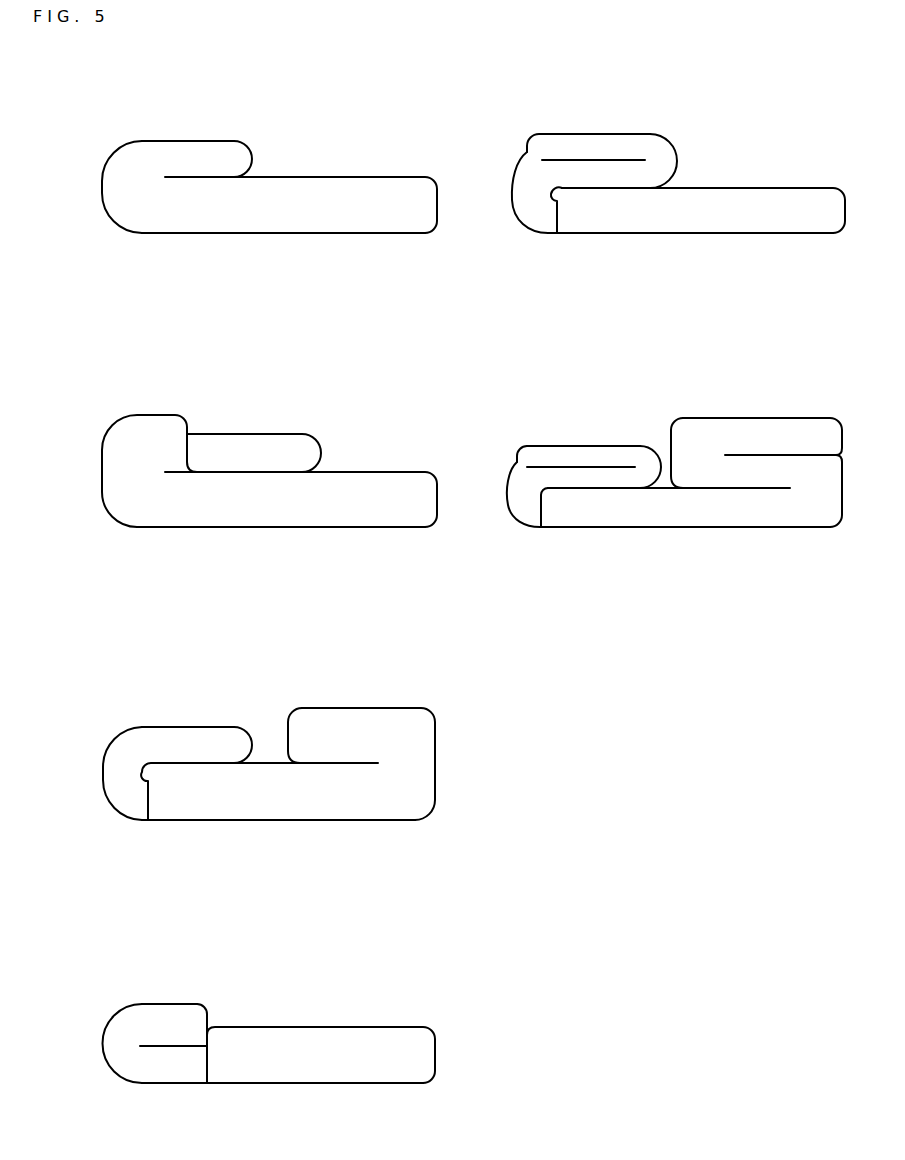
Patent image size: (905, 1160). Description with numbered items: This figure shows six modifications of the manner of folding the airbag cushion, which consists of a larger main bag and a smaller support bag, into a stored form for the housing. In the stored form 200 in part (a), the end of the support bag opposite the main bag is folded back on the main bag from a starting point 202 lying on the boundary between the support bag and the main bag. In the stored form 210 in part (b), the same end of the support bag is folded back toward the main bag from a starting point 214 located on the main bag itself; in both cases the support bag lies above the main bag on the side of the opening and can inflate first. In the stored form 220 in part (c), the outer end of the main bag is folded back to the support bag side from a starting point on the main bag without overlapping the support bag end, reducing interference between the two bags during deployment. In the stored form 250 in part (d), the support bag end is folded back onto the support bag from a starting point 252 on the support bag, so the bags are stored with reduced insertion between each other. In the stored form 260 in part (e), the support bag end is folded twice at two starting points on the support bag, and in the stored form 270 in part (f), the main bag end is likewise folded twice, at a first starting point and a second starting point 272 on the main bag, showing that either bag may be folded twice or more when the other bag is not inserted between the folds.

The stored form 200 is at (97, 122).
The starting point 202 is at (101, 178).
The stored form 210 is at (101, 397).
The starting point 214 is at (101, 468).
The stored form 220 is at (102, 704).
The stored form 250 is at (102, 977).
The starting point 252 is at (101, 1046).
The stored form 260 is at (506, 126).
The stored form 270 is at (526, 413).
The second starting point 272 is at (669, 434).